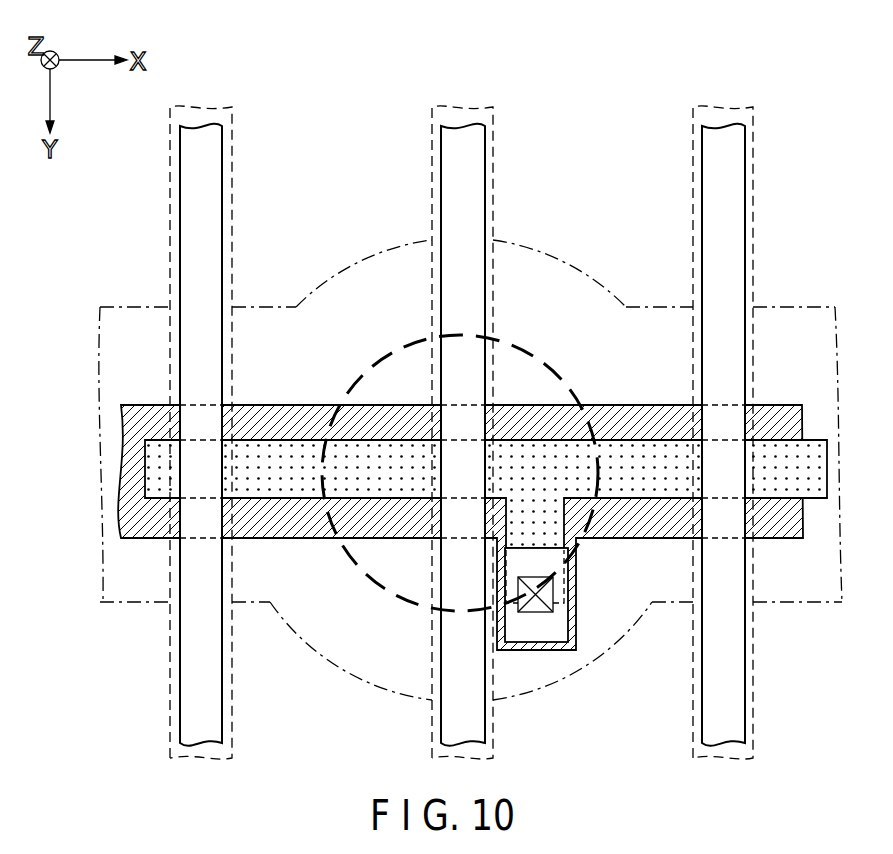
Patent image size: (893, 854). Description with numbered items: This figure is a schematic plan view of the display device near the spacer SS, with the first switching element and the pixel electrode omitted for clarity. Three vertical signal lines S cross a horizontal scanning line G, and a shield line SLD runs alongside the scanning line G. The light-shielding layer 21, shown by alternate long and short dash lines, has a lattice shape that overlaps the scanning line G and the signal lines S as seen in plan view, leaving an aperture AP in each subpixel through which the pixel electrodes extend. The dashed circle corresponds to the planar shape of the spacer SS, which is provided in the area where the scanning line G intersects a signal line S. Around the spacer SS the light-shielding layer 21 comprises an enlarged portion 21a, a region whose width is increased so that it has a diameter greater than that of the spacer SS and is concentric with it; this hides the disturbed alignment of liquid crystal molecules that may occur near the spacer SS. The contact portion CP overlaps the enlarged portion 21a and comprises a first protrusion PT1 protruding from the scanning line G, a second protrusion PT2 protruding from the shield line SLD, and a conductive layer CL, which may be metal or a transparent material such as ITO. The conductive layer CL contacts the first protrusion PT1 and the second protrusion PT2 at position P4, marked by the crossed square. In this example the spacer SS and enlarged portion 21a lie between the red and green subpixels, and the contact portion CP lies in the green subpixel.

The signal line S is at (198, 130).
The aperture AP is at (406, 124).
The light-shielding layer 21 is at (124, 307).
The enlarged portion 21a is at (384, 688).
The scanning line G is at (160, 440).
The shield line SLD is at (135, 538).
The spacer SS is at (525, 348).
The first protrusion PT1 is at (555, 522).
The second protrusion PT2 is at (570, 652).
The conductive layer CL is at (518, 650).
The contact portion CP is at (600, 645).
The position P4 is at (553, 590).